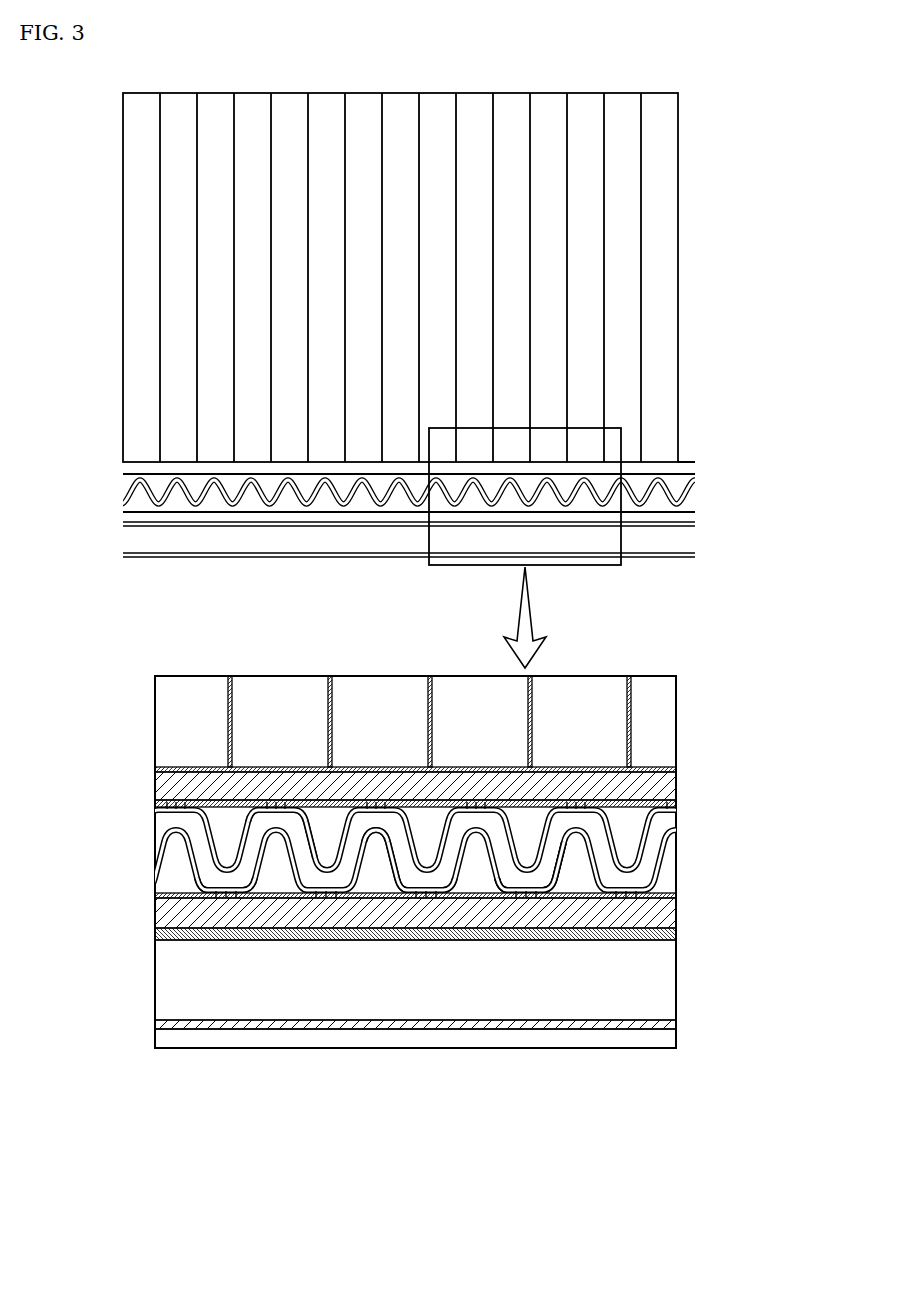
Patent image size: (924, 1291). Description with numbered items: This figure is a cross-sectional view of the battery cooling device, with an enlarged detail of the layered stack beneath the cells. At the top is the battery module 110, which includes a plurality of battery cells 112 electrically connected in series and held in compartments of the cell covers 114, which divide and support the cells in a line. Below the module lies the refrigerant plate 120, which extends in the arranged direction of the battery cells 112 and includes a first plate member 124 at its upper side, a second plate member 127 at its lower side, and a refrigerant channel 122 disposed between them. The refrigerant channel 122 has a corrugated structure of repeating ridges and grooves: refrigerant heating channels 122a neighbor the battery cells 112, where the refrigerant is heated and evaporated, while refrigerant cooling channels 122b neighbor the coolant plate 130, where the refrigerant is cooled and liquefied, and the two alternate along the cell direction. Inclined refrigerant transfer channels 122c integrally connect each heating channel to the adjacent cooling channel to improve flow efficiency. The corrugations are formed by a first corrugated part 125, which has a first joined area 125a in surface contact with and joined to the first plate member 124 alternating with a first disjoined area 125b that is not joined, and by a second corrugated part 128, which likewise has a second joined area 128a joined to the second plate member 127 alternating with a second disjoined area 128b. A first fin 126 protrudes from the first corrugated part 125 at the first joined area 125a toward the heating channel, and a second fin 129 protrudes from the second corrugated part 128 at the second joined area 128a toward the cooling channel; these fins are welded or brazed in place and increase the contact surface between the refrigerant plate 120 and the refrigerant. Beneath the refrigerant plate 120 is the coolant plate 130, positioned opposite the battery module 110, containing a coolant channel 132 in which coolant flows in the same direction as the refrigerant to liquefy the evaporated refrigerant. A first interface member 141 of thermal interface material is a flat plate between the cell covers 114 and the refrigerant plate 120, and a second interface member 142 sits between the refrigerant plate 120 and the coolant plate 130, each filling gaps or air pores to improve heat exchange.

The battery module 110 is at (680, 258).
The battery cells 112 is at (598, 688).
The cell covers 114 is at (629, 723).
The refrigerant plate 120 is at (426, 869).
The refrigerant channel 122 is at (426, 973).
The refrigerant heating channels 122a is at (378, 818).
The refrigerant cooling channels 122b is at (432, 886).
The refrigerant transfer channels 122c is at (405, 857).
The first plate member 124 is at (633, 803).
The first corrugated part 125 is at (427, 740).
The first joined area 125a is at (283, 807).
The first disjoined area 125b is at (313, 835).
The first fin 126 is at (387, 786).
The second plate member 127 is at (662, 889).
The second corrugated part 128 is at (577, 982).
The second joined area 128a is at (528, 895).
The second disjoined area 128b is at (563, 860).
The second fin 129 is at (215, 893).
The coolant plate 130 is at (660, 1031).
The coolant channel 132 is at (654, 985).
The first interface member 141 is at (650, 787).
The second interface member 142 is at (660, 913).